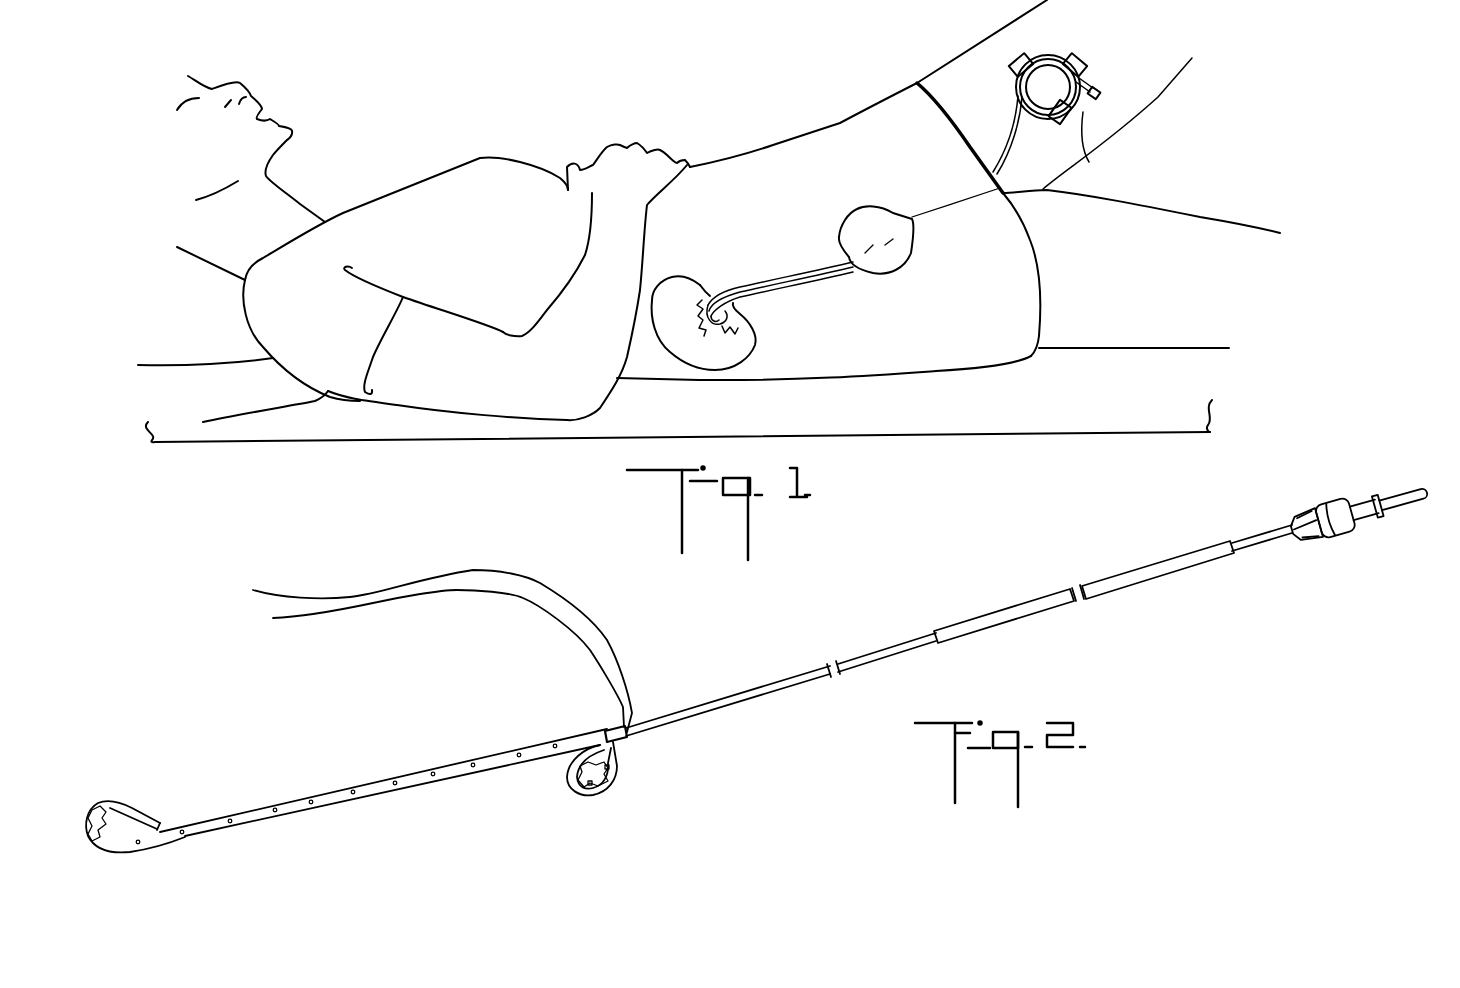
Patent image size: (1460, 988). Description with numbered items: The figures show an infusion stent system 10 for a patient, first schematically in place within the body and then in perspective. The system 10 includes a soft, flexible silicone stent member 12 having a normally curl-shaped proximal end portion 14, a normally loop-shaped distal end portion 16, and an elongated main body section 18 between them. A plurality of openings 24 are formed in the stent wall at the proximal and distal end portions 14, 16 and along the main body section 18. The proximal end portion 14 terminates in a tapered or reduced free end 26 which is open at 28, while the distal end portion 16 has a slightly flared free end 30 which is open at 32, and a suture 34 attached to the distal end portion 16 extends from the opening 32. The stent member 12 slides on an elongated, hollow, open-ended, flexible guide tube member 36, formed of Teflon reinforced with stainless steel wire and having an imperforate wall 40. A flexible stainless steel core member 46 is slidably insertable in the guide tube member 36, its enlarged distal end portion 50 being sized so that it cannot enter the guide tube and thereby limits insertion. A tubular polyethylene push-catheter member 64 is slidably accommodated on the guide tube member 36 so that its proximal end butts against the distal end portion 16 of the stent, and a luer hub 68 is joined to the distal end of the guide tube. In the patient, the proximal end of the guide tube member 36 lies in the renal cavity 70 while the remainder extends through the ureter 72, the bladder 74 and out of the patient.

In FIG. 1, the infusion stent system 10 is at (788, 253).
In FIG. 2, the infusion stent system 10 is at (874, 626).
In FIG. 1, the stent member 12 is at (719, 292).
In FIG. 2, the stent member 12 is at (369, 776).
In FIG. 2, the proximal end portion 14 is at (104, 798).
In FIG. 2, the distal end portion 16 is at (617, 757).
In FIG. 2, the main body section 18 is at (410, 783).
In FIG. 2, the openings 24 is at (607, 803).
In FIG. 2, the free end 26 is at (150, 812).
In FIG. 2, the opening 28 is at (163, 825).
In FIG. 2, the free end 30 is at (608, 732).
In FIG. 2, the opening 32 is at (626, 738).
In FIG. 1, the suture 34 is at (1089, 162).
In FIG. 2, the suture 34 is at (472, 592).
In FIG. 1, the guide tube member 36 is at (1007, 140).
In FIG. 2, the guide tube member 36 is at (785, 674).
In FIG. 2, the imperforate wall 40 is at (746, 700).
In FIG. 2, the core member 46 is at (1400, 486).
In FIG. 2, the enlarged distal end portion 50 is at (1407, 508).
In FIG. 2, the push-catheter member 64 is at (1022, 616).
In FIG. 1, the luer hub 68 is at (1100, 93).
In FIG. 2, the luer hub 68 is at (1338, 503).
In FIG. 1, the renal cavity 70 is at (747, 337).
In FIG. 1, the ureter 72 is at (841, 290).
In FIG. 1, the bladder 74 is at (920, 261).